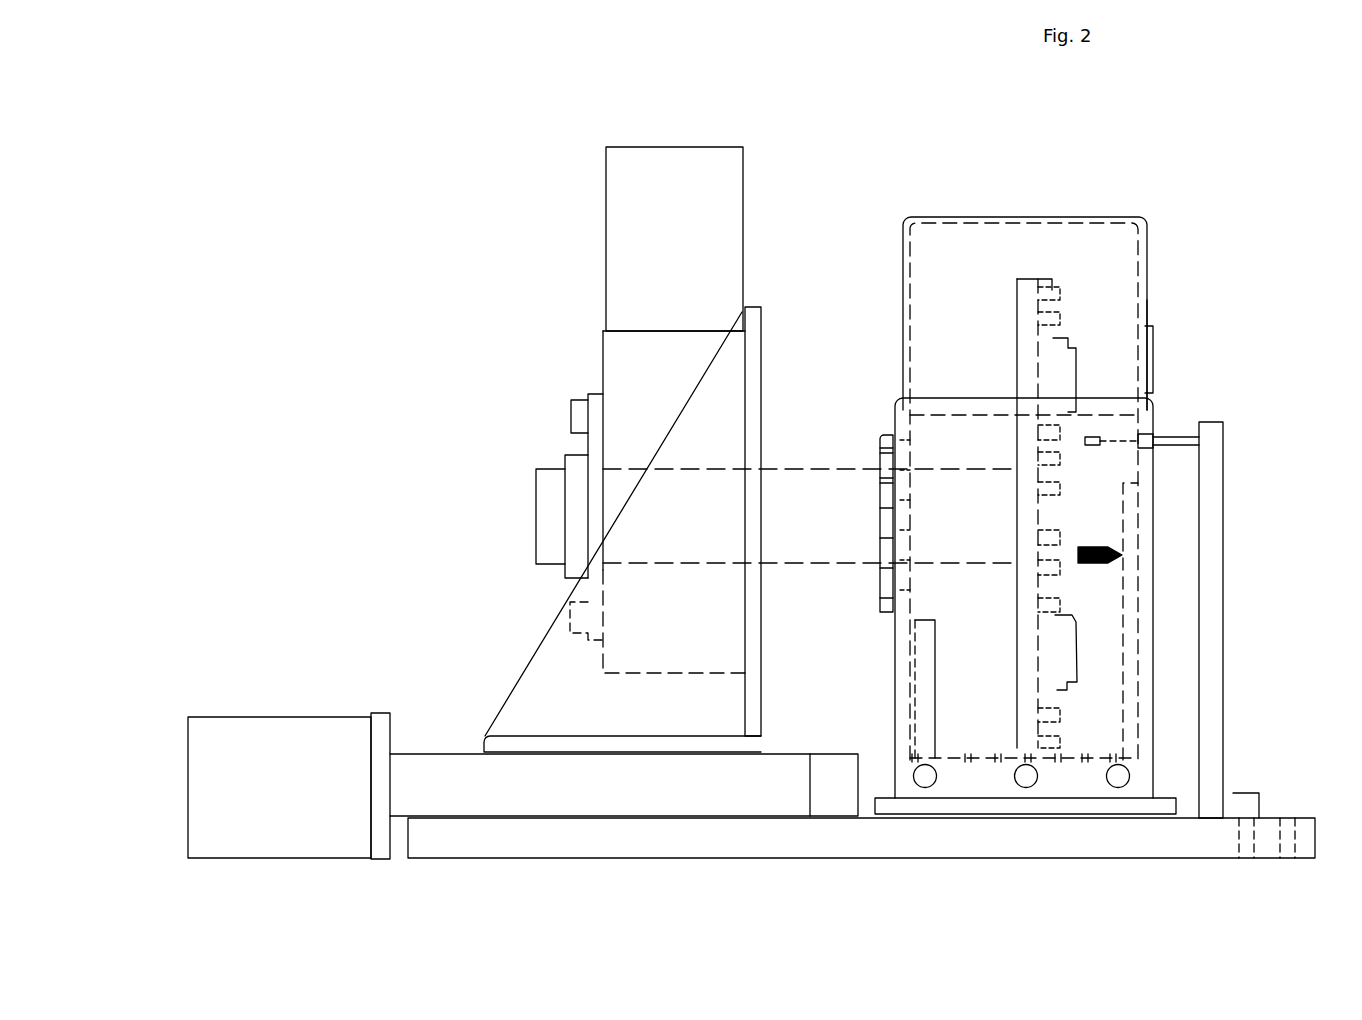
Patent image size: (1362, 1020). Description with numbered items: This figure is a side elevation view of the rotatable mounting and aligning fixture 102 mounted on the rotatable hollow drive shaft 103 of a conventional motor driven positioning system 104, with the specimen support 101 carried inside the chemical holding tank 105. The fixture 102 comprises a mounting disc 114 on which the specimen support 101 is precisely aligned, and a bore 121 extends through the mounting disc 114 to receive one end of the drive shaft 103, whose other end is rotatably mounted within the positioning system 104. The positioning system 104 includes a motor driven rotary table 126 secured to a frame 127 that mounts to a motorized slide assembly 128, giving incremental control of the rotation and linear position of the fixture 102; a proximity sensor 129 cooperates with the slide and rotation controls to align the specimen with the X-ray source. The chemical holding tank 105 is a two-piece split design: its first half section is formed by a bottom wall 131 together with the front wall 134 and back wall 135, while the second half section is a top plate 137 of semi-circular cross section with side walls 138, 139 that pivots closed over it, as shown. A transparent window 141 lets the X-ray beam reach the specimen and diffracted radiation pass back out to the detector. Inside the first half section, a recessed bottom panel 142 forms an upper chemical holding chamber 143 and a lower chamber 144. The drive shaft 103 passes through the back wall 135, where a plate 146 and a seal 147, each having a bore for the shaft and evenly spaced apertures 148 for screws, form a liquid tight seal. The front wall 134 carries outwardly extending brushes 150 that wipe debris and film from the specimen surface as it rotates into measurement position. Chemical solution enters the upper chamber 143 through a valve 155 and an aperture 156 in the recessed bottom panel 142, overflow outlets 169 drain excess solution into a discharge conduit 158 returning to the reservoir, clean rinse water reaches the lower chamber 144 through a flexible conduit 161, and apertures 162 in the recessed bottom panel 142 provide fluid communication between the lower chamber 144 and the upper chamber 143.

The specimen support 101 is at (1052, 279).
The rotatable mounting and aligning fixture 102 is at (990, 303).
The rotatable hollow drive shaft 103 is at (845, 468).
The positioning system 104 is at (515, 195).
The chemical holding tank 105 is at (979, 172).
The mounting disc 114 is at (1017, 345).
The bore 121 is at (1020, 468).
The motor driven rotary table 126 is at (606, 331).
The frame 127 is at (500, 700).
The motorized slide assembly 128 is at (448, 752).
The proximity sensor 129 is at (1225, 546).
The bottom wall 131 is at (1179, 804).
The front wall 134 is at (1154, 548).
The back wall 135 is at (895, 683).
The top plate 137 is at (1037, 215).
The side wall 138 is at (1150, 275).
The side wall 139 is at (903, 235).
The transparent window 141 is at (1155, 345).
The recessed bottom panel 142 is at (951, 752).
The upper chemical holding chamber 143 is at (1105, 681).
The lower chamber 144 is at (1136, 784).
The plate 146 is at (880, 435).
The seal 147 is at (893, 612).
The apertures 148 is at (880, 575).
The brushes 150 is at (1115, 565).
The valve 155 is at (1122, 788).
The aperture 156 is at (1134, 754).
The discharge conduit 158 is at (928, 788).
The flexible conduit 161 is at (1030, 788).
The apertures 162 is at (1082, 752).
The overflow outlets 169 is at (915, 640).